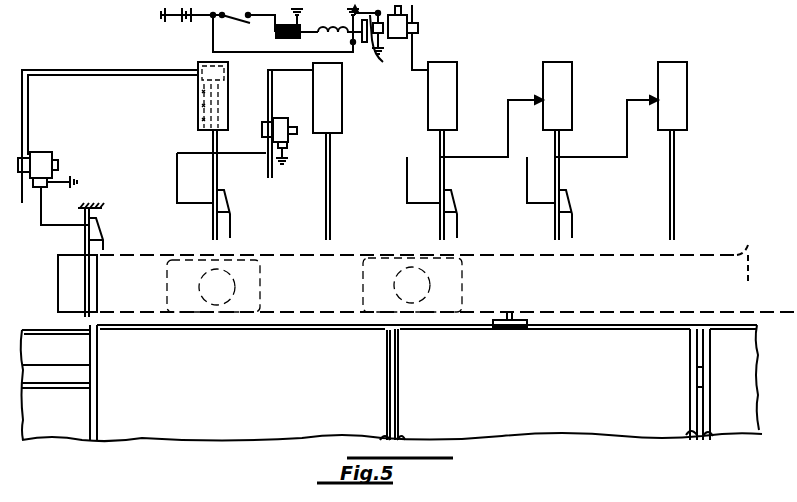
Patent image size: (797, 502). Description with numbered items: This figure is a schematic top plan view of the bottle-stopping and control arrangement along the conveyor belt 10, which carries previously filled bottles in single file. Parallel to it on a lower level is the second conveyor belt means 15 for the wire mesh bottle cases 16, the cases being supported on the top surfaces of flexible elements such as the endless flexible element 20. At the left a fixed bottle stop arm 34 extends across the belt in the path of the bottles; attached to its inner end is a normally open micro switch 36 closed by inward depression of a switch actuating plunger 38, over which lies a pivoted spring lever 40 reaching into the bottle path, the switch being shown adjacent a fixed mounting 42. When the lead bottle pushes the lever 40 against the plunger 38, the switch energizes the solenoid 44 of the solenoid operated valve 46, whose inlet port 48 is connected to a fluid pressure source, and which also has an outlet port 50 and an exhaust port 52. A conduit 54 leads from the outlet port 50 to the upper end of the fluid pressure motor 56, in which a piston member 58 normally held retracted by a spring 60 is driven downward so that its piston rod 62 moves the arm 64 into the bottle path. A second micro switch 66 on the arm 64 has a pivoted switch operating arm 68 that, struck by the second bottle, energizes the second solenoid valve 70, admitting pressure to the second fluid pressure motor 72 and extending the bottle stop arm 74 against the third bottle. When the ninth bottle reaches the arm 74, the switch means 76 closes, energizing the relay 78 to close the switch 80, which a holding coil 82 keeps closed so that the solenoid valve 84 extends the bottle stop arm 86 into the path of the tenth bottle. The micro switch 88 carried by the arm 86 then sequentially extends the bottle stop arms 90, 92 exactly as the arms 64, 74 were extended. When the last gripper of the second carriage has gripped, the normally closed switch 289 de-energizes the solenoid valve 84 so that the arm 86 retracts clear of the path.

The conveyor belt 10 is at (748, 246).
The second conveyor belt means 15 is at (63, 448).
The bottle cases 16 is at (180, 432).
The endless flexible element 20 is at (55, 374).
The fixed bottle stop arm 34 is at (89, 281).
The micro switch 36 is at (85, 241).
The switch actuating plunger 38 is at (100, 228).
The pivoted spring lever 40 is at (103, 242).
The fixed mount 42 is at (100, 215).
The solenoid 44 is at (48, 181).
The solenoid operated valve 46 is at (42, 152).
The inlet port 48 is at (22, 178).
The outlet port 50 is at (20, 160).
The exhaust port 52 is at (58, 165).
The conduit 54 is at (106, 72).
The fluid pressure motor 56 is at (198, 78).
The piston member 58 is at (224, 78).
The spring 60 is at (228, 97).
The piston rod 62 is at (217, 143).
The arm 64 is at (213, 218).
The second micro switch 66 is at (223, 192).
The pivoted switch operating arm 68 is at (231, 213).
The second solenoid valve 70 is at (290, 112).
The second fluid pressure motor 72 is at (342, 110).
The bottle stop arm 74 is at (326, 230).
The switch means 76 is at (235, 18).
The relay 78 is at (276, 31).
The switch 80 is at (369, 43).
The holding coil 82 is at (352, 21).
The solenoid valve 84 is at (413, 15).
The bottle stop arm 86 is at (440, 227).
The micro switch 88 is at (457, 226).
The bottle stop arm 90 is at (555, 227).
The bottle stop arm 92 is at (670, 226).
The normally closed switch 289 is at (381, 54).